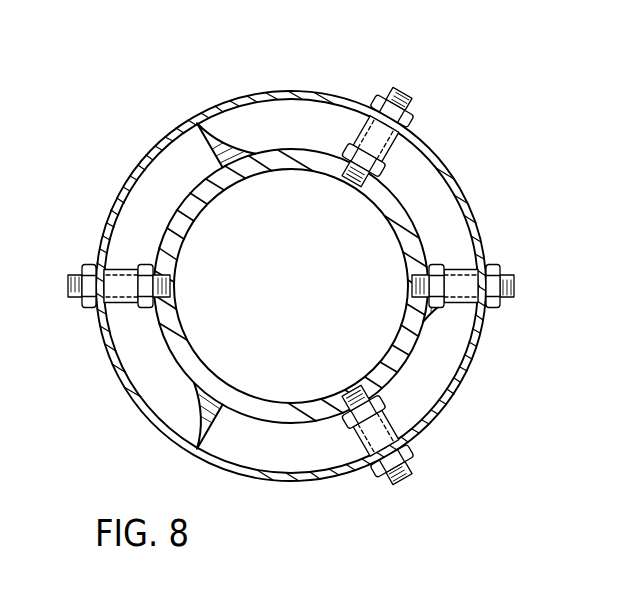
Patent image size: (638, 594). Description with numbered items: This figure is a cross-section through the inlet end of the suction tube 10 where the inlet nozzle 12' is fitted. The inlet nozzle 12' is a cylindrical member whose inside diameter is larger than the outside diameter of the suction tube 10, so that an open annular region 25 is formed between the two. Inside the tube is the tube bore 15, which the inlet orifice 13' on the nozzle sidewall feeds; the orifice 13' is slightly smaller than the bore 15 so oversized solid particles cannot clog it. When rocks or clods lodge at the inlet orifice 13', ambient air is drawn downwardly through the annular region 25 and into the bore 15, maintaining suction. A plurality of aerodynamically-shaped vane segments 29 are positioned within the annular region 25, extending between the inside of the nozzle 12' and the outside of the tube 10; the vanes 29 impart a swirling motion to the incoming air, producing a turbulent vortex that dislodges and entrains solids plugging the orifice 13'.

The suction tube 10 is at (398, 240).
The inlet nozzle 12' is at (230, 286).
The inlet orifice 13' is at (475, 286).
The tube bore 15 is at (301, 300).
The annular region 25 is at (161, 212).
The vane segments 29 is at (223, 146).